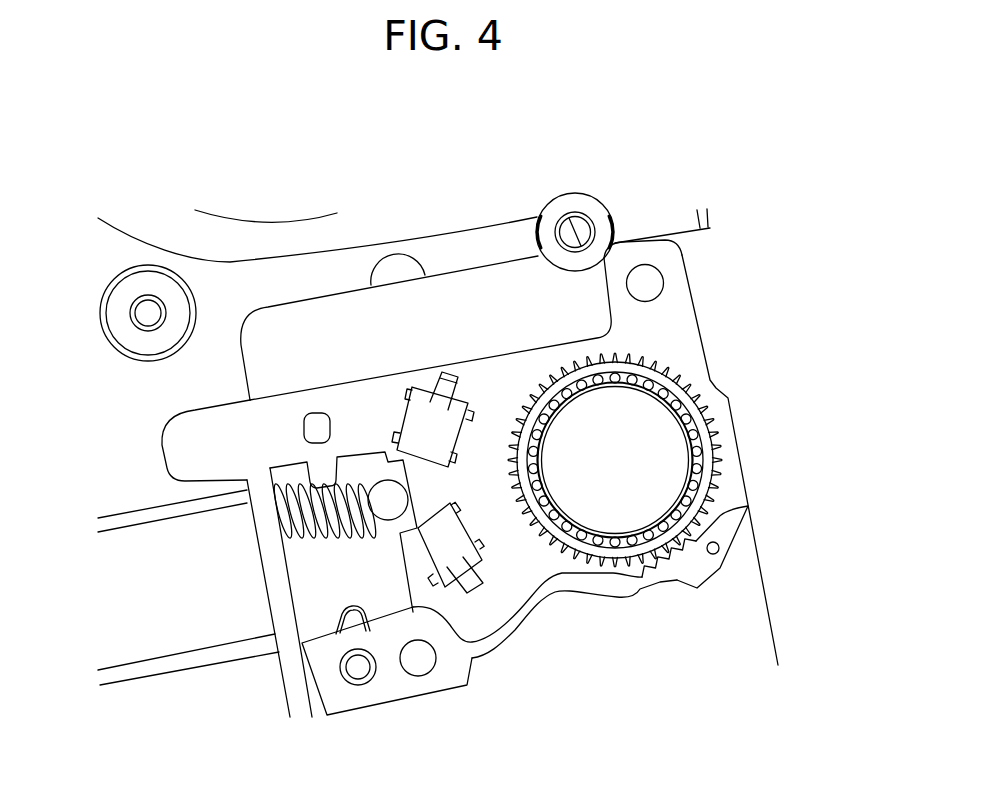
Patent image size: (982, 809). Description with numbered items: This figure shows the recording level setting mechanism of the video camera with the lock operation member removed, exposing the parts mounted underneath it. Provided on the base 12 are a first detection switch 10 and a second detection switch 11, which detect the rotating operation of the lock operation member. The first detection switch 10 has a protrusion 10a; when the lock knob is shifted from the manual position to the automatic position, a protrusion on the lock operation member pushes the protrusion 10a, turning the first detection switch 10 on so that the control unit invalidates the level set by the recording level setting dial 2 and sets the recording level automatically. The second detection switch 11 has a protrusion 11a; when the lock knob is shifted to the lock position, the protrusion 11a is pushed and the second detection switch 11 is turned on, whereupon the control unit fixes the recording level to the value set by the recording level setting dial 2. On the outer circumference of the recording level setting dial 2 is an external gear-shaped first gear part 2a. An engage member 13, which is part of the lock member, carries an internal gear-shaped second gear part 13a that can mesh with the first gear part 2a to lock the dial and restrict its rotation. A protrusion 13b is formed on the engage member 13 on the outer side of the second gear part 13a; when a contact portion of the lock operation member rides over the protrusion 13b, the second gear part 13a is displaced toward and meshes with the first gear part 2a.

The recording level setting dial 2 is at (633, 450).
The first gear part 2a is at (712, 484).
The first detection switch 10 is at (420, 418).
The protrusion 10a is at (434, 381).
The second detection switch 11 is at (427, 558).
The protrusion 11a is at (468, 577).
The base 12 is at (670, 338).
The engage member 13 is at (385, 688).
The second gear part 13a is at (648, 581).
The protrusion 13b is at (710, 577).